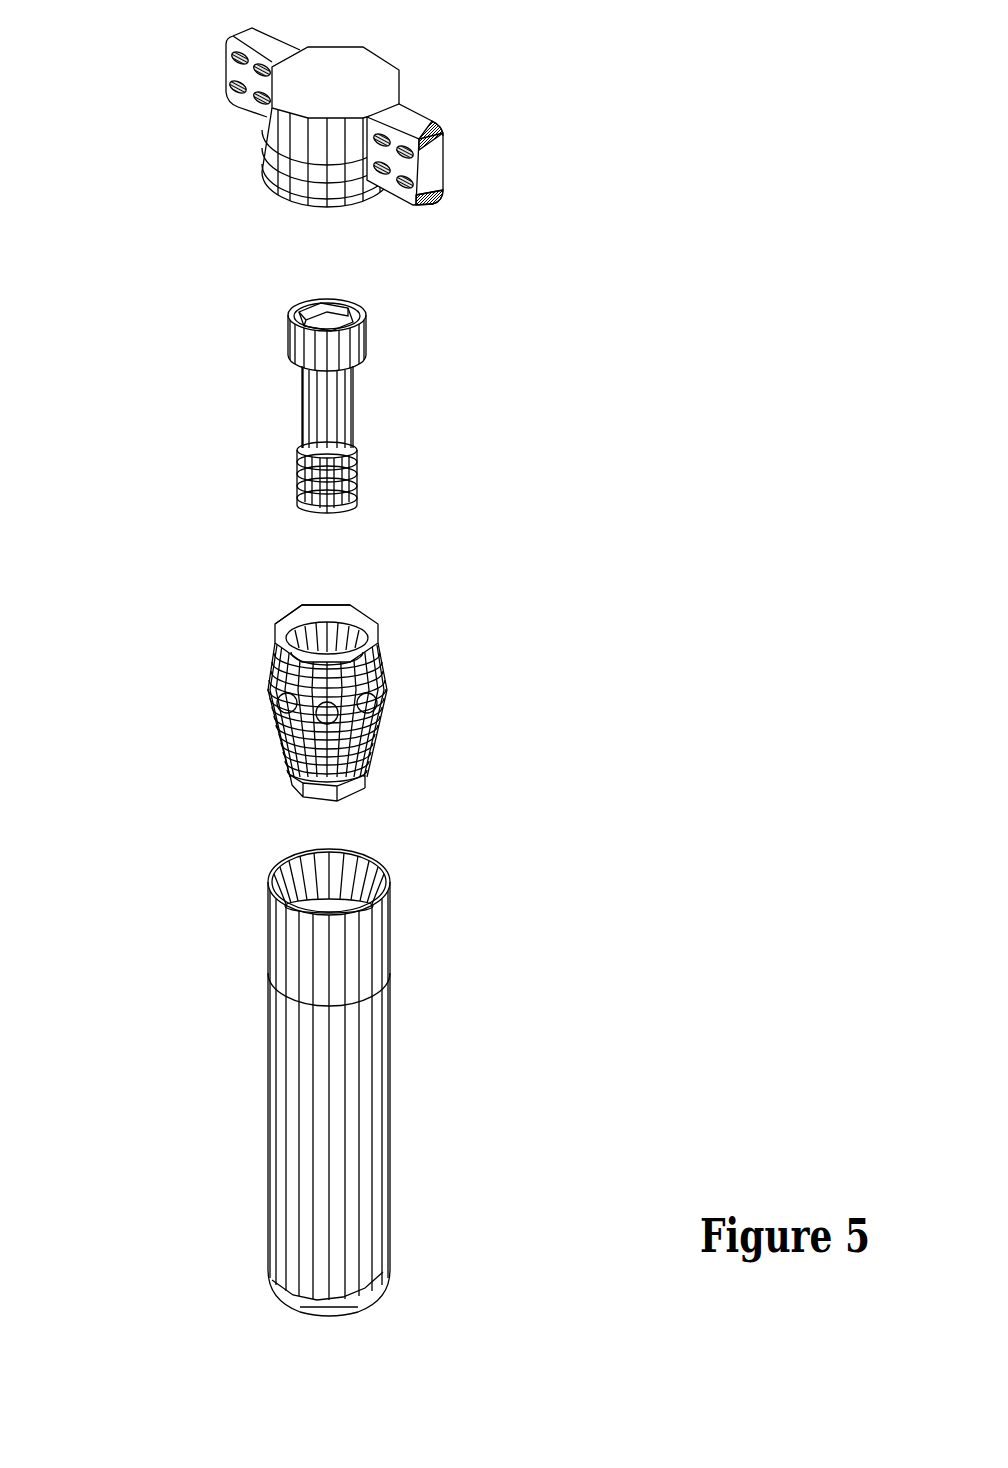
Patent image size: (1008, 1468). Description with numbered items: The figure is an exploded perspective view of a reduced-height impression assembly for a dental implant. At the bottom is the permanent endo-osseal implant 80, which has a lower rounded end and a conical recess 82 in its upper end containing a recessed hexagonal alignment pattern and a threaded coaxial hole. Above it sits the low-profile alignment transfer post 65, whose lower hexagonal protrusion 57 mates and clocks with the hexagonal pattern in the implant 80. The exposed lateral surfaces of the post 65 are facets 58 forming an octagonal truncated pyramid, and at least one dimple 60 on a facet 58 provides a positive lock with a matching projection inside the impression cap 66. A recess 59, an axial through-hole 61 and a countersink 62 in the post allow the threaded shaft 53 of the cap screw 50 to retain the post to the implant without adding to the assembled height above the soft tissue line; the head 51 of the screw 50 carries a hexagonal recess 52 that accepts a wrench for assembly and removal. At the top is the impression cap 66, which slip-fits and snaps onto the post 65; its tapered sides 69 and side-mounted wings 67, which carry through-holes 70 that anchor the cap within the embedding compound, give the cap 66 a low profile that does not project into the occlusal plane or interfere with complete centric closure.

The impression cap 66 is at (327, 139).
The wings 67 is at (435, 172).
The through-holes 70 is at (225, 92).
The tapered sides 69 is at (268, 175).
The cap screw 50 is at (332, 405).
The fastener head 51 is at (290, 345).
The hexagonal recess 52 is at (290, 322).
The threaded shaft 53 is at (293, 462).
The alignment transfer post 65 is at (350, 689).
The countersink 62 is at (372, 617).
The recess 59 is at (320, 622).
The axial through-hole 61 is at (287, 648).
The facets 58 is at (268, 688).
The dimple 60 is at (387, 708).
The hexagonal protrusion 57 is at (350, 783).
The endo-osseal implant 80 is at (352, 1062).
The conical recess 82 is at (320, 873).